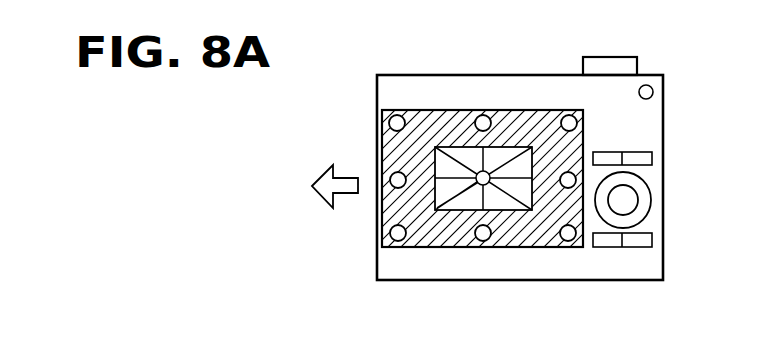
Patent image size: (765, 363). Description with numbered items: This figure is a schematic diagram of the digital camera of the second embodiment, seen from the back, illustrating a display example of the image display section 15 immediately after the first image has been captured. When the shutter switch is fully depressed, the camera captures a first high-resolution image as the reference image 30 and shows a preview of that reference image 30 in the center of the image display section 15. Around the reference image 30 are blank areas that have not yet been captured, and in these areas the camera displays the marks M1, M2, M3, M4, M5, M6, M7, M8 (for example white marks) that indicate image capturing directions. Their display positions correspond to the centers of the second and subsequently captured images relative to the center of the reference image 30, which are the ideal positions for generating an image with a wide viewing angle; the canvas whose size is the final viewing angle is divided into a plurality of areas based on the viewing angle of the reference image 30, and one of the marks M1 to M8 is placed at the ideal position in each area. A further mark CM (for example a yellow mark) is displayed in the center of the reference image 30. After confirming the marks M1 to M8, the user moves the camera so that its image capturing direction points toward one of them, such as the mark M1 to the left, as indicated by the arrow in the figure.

The image display section 15 is at (377, 110).
The mark CM is at (382, 215).
The reference image 30 is at (511, 147).
The mark M1 is at (392, 174).
The mark M2 is at (397, 115).
The mark M3 is at (483, 115).
The mark M4 is at (570, 115).
The mark M5 is at (568, 172).
The mark M6 is at (568, 242).
The mark M7 is at (478, 242).
The mark M8 is at (390, 243).